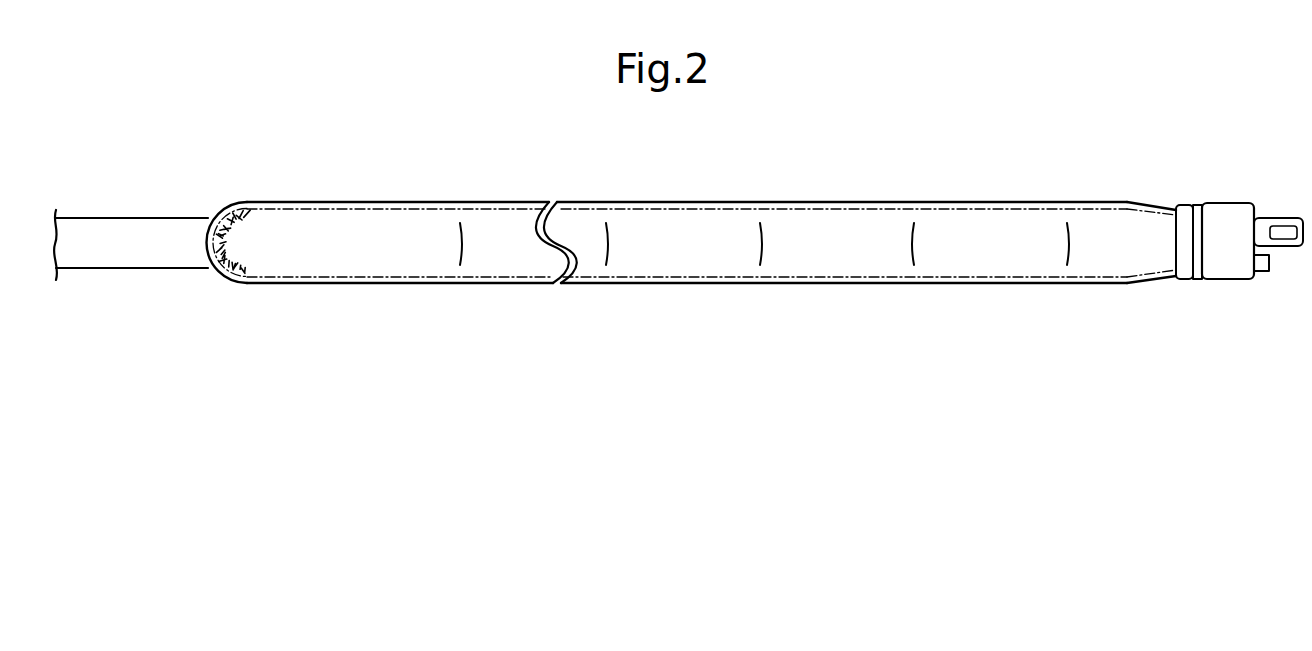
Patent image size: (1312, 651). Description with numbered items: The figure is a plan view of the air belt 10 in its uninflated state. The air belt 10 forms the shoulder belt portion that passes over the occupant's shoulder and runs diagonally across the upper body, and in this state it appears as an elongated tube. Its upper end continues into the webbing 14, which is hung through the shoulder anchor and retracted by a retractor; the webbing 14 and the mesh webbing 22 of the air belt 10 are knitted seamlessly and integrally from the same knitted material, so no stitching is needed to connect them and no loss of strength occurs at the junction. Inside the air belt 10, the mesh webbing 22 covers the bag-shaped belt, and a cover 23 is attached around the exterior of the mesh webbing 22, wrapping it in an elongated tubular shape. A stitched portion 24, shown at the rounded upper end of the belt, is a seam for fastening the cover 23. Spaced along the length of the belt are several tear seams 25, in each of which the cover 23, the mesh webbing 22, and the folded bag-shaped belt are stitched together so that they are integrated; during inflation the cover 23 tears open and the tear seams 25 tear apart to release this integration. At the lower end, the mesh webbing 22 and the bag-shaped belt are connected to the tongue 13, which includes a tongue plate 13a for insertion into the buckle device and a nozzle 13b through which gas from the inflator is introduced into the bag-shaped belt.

The air belt 10 is at (692, 237).
The tongue 13 is at (1243, 231).
The tongue plate 13a is at (1291, 218).
The nozzle 13b is at (1262, 272).
The webbing 14 is at (129, 226).
The mesh webbing 22 is at (990, 285).
The cover 23 is at (722, 201).
The stitched portion 24 is at (258, 222).
The tear seam 25 is at (463, 240).